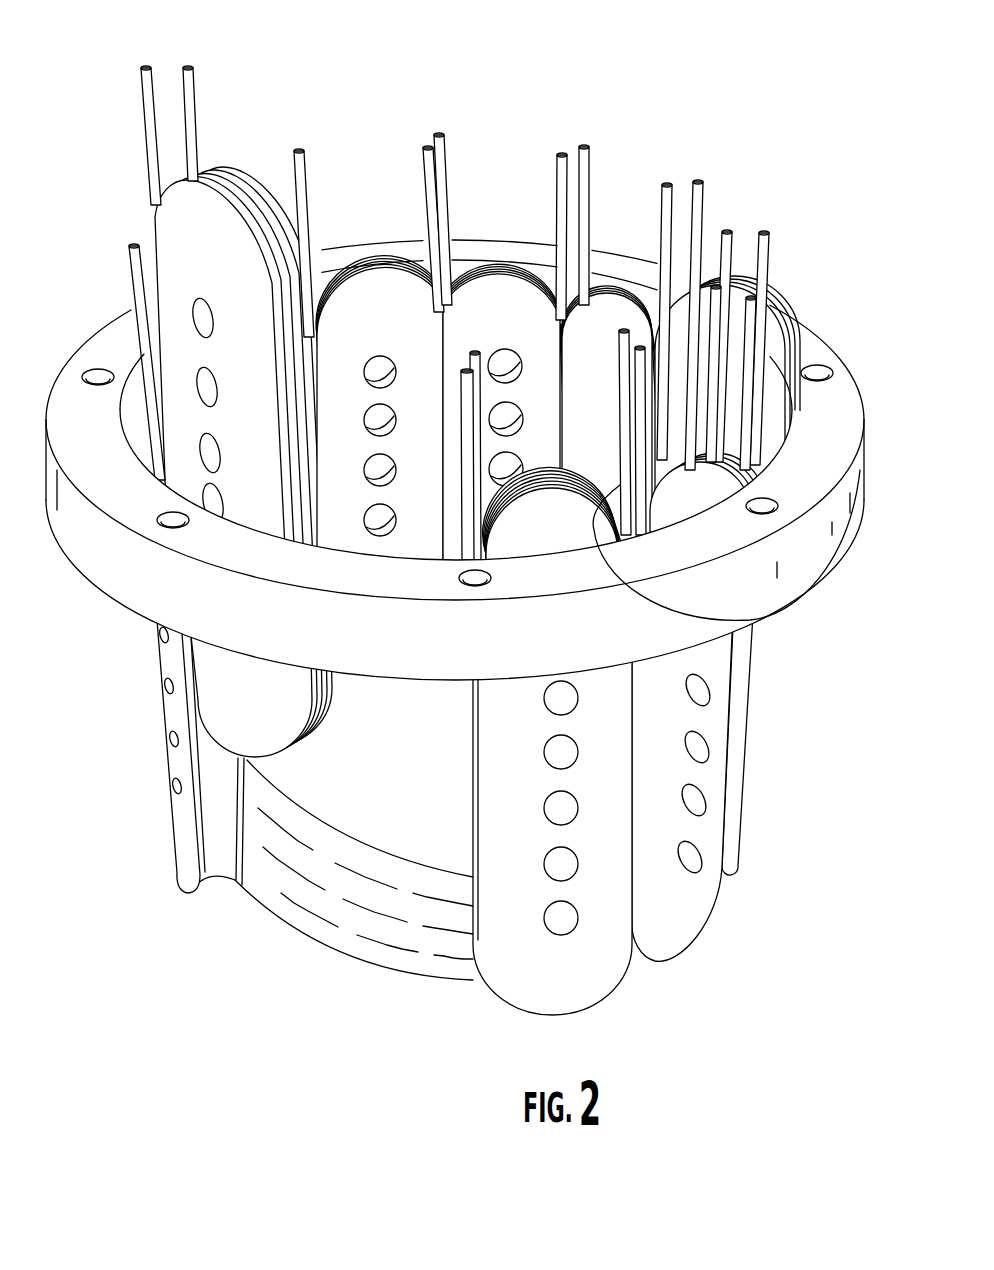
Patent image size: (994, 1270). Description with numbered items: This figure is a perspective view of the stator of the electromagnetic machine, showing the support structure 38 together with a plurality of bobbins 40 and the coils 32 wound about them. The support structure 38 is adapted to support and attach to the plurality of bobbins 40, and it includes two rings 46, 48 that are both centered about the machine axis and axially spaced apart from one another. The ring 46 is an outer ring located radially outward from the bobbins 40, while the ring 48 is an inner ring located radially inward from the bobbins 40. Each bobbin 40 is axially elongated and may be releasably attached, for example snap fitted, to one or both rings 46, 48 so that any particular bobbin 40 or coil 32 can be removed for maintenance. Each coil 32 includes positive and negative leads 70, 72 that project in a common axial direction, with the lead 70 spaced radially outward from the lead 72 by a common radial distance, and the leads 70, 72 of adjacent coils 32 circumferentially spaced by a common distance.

The support structure 38 is at (70, 117).
The coils 32 is at (234, 178).
The bobbins 40 is at (362, 233).
The ring 46 is at (864, 447).
The ring 48 is at (395, 980).
The positive lead 70 is at (703, 200).
The negative lead 72 is at (660, 222).